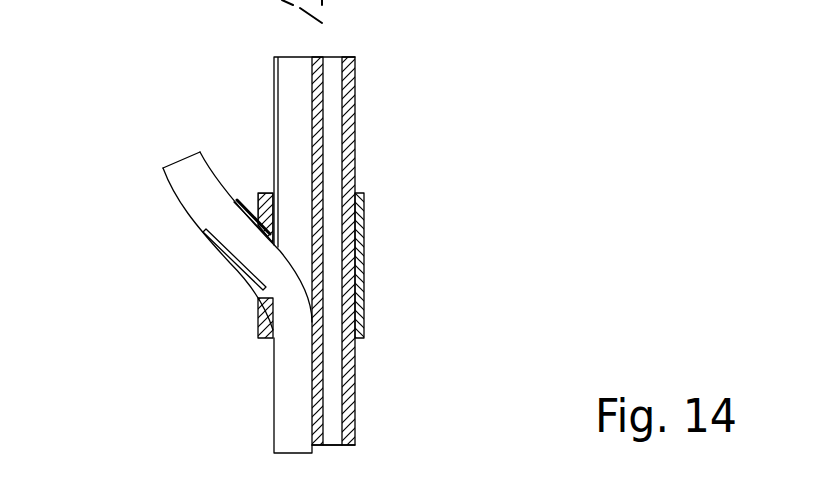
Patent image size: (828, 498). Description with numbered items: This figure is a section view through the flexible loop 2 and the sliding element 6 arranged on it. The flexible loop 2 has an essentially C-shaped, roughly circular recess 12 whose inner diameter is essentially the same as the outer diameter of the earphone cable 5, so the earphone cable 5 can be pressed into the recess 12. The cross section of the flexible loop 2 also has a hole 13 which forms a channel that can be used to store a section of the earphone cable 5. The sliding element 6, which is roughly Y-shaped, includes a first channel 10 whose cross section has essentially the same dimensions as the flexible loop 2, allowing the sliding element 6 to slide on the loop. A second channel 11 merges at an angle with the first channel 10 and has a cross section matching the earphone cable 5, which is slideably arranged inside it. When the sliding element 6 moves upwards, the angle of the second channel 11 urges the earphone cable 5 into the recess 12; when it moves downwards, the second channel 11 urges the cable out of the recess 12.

The flexible loop 2 is at (353, 92).
The earphone cable 5 is at (188, 187).
The sliding element 6 is at (364, 232).
The first channel 10 is at (358, 286).
The second channel 11 is at (250, 268).
The recess 12 is at (287, 87).
The hole 13 is at (332, 432).